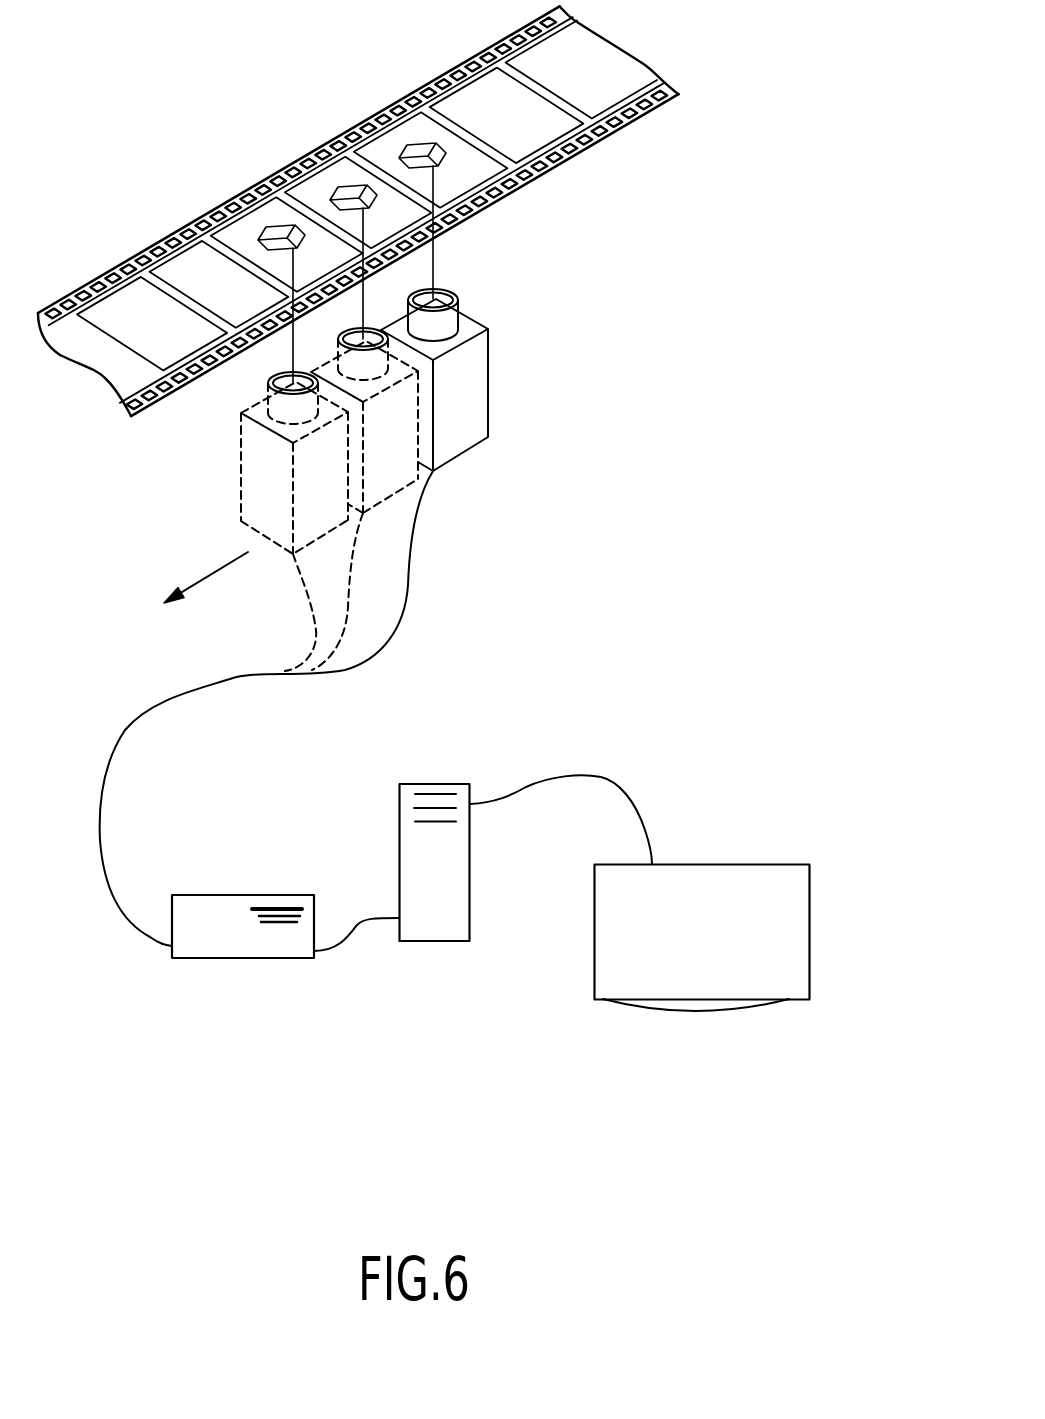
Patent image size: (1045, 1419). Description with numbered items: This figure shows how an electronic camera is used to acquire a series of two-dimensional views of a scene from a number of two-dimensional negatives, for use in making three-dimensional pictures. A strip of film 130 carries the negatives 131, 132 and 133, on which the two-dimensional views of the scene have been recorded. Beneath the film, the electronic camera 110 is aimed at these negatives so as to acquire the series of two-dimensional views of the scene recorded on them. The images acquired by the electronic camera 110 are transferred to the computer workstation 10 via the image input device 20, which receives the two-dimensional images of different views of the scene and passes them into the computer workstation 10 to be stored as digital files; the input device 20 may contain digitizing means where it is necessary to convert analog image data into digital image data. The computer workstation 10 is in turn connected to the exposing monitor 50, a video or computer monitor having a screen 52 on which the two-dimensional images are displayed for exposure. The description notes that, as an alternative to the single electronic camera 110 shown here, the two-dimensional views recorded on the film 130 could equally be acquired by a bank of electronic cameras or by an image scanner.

The computer workstation 10 is at (458, 910).
The image input device 20 is at (196, 902).
The exposing monitor 50 is at (792, 875).
The screen 52 is at (724, 1006).
The electronic camera 110 is at (482, 351).
The film 130 is at (643, 62).
The negative 131 is at (414, 128).
The negative 132 is at (352, 172).
The negative 133 is at (303, 213).